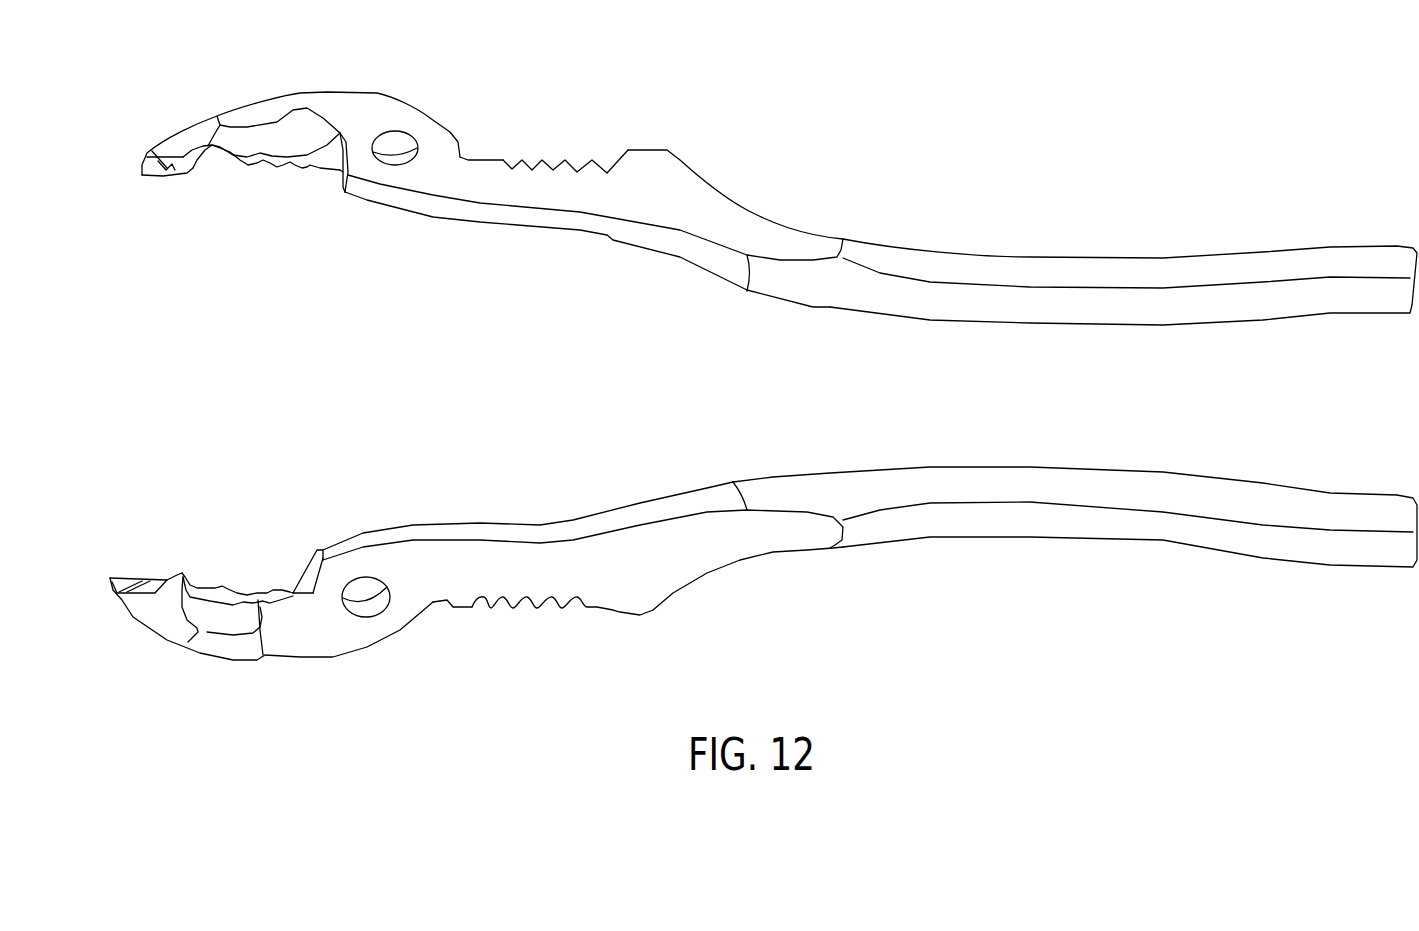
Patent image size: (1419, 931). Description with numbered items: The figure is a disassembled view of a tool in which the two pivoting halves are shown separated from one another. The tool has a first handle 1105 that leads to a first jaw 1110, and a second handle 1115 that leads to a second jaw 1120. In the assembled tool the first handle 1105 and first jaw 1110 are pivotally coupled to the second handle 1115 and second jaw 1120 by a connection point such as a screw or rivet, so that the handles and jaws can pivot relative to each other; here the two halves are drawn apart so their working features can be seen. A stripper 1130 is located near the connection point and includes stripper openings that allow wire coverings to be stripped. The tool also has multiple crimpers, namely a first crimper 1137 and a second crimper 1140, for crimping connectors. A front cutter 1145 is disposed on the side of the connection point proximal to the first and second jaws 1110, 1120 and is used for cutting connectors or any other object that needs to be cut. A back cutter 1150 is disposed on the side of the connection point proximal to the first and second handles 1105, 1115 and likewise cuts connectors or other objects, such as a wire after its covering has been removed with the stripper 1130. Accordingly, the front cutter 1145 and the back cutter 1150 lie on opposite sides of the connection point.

The first handle 1105 is at (1310, 553).
The first jaw 1110 is at (147, 610).
The second handle 1115 is at (1307, 260).
The second jaw 1120 is at (155, 147).
The stripper 1130 is at (550, 165).
The first crimper 1137 is at (188, 173).
The second crimper 1140 is at (252, 168).
The front cutter 1145 is at (322, 172).
The back cutter 1150 is at (480, 160).